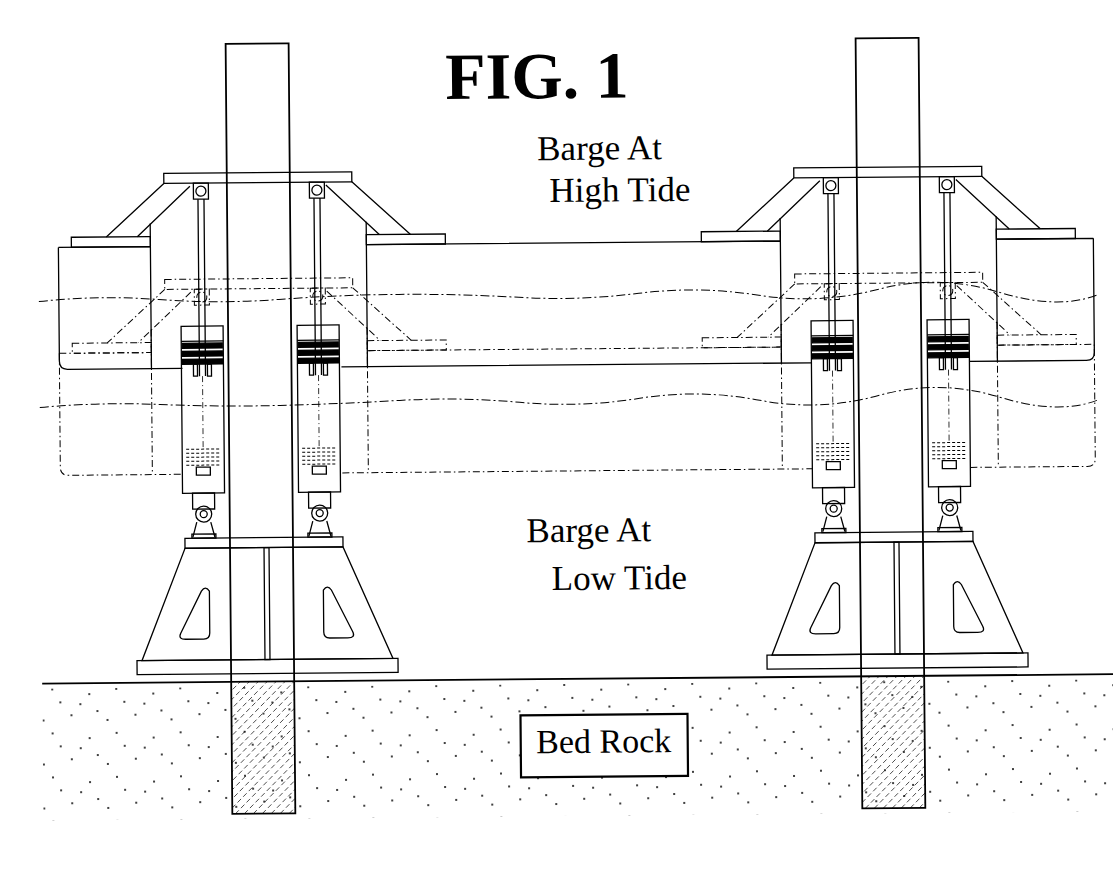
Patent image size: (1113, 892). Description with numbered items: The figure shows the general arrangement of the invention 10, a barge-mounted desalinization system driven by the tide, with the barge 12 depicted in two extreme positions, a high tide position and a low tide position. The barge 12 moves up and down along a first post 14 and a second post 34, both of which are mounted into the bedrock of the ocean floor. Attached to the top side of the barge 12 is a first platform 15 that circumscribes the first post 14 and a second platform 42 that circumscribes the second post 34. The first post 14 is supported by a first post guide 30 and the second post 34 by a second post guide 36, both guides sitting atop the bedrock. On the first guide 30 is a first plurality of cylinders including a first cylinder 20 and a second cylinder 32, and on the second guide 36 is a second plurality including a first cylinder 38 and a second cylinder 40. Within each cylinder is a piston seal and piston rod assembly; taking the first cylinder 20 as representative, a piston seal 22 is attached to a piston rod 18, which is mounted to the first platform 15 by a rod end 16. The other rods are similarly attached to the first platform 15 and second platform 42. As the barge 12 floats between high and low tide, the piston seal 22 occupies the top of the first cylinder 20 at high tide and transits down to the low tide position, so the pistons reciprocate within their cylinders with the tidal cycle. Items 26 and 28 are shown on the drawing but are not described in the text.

The invention 10 is at (868, 416).
The barge 12 is at (570, 243).
The first post 14 is at (292, 156).
The first platform 15 is at (167, 170).
The rod end 16 is at (200, 181).
The piston rod 18 is at (199, 220).
The first cylinder 20 is at (182, 420).
The piston seal 22 is at (182, 360).
The lower pulley 26 is at (192, 511).
The base plate 28 is at (190, 531).
The first post guide 30 is at (145, 645).
The second cylinder 32 is at (341, 488).
The second post 34 is at (858, 148).
The second post guide 36 is at (775, 645).
The first cylinder 38 is at (812, 481).
The second cylinder 40 is at (971, 478).
The second platform 42 is at (984, 168).